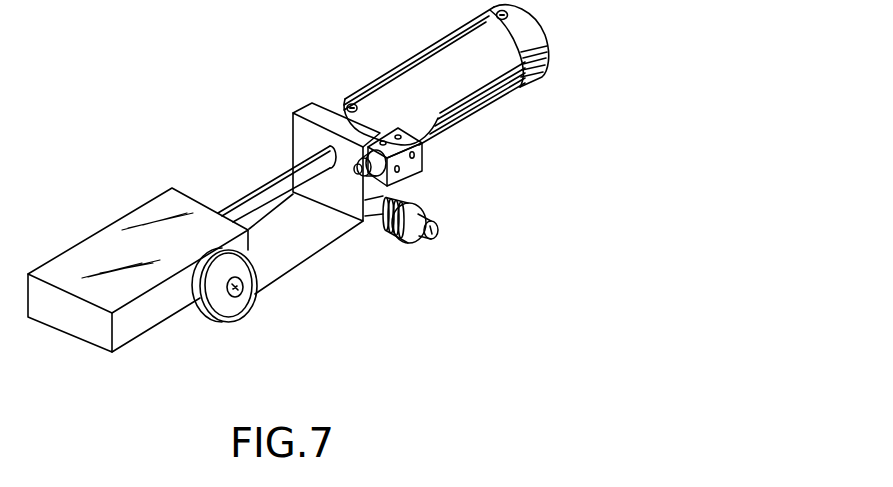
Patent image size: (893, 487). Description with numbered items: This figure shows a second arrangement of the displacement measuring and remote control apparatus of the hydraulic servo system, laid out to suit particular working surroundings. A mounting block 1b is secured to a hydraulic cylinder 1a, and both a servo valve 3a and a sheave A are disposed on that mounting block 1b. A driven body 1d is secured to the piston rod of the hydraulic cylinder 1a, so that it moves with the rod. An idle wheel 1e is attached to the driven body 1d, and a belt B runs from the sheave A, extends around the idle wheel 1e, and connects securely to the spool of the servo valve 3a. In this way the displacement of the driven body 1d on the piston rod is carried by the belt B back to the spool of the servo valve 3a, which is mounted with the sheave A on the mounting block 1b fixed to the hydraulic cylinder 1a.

The hydraulic cylinder 1a is at (440, 58).
The mounting block 1b is at (302, 105).
The driven body 1d is at (133, 215).
The idle wheel 1e is at (223, 312).
The servo valve 3a is at (425, 154).
The sheave A is at (425, 212).
The belt B is at (322, 257).